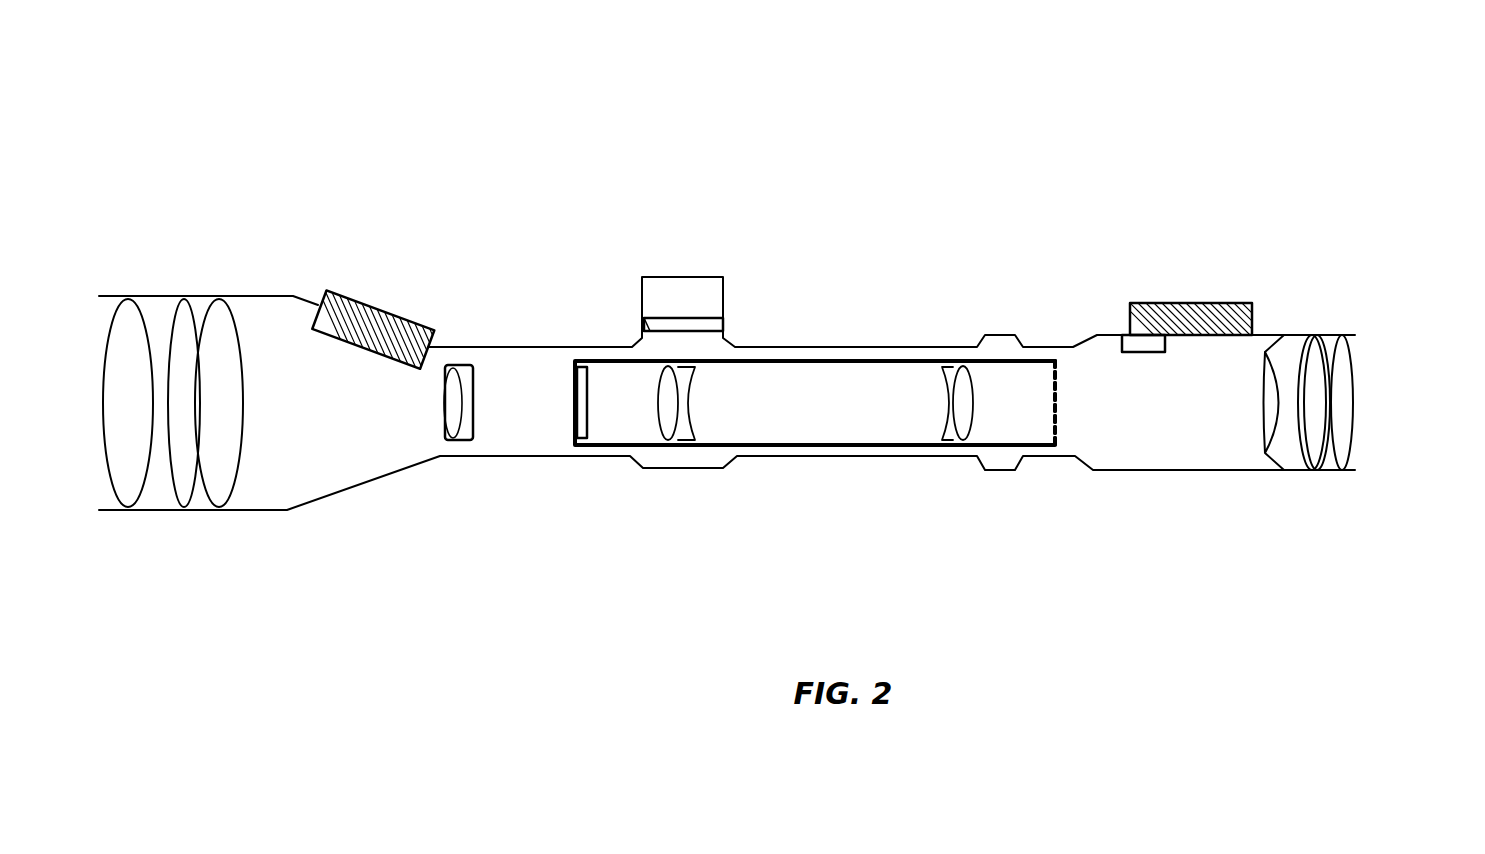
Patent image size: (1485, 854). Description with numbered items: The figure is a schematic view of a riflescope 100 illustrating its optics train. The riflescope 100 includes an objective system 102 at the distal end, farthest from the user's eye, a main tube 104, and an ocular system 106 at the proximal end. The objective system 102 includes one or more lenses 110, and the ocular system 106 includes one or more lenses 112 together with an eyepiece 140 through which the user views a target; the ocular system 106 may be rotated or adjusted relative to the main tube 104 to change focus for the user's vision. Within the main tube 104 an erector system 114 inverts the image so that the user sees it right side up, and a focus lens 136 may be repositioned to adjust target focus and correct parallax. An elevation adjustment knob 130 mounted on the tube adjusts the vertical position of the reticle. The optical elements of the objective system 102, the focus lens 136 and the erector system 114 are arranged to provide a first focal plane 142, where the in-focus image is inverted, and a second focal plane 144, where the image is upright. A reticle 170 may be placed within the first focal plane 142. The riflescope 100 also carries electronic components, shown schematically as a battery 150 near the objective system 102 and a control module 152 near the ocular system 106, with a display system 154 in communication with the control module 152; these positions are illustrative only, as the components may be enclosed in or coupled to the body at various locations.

The riflescope 100 is at (825, 213).
The objective system 102 is at (204, 391).
The main tube 104 is at (860, 347).
The ocular system 106 is at (1326, 462).
The lenses 110 is at (249, 343).
The lenses 112 is at (1255, 446).
The erector system 114 is at (811, 416).
The elevation adjustment knob 130 is at (670, 278).
The focus lens 136 is at (463, 440).
The eyepiece 140 is at (1353, 410).
The first focal plane 142 is at (538, 359).
The second focal plane 144 is at (1057, 420).
The battery 150 is at (370, 307).
The control module 152 is at (1172, 303).
The display system 154 is at (1100, 338).
The reticle 170 is at (572, 392).